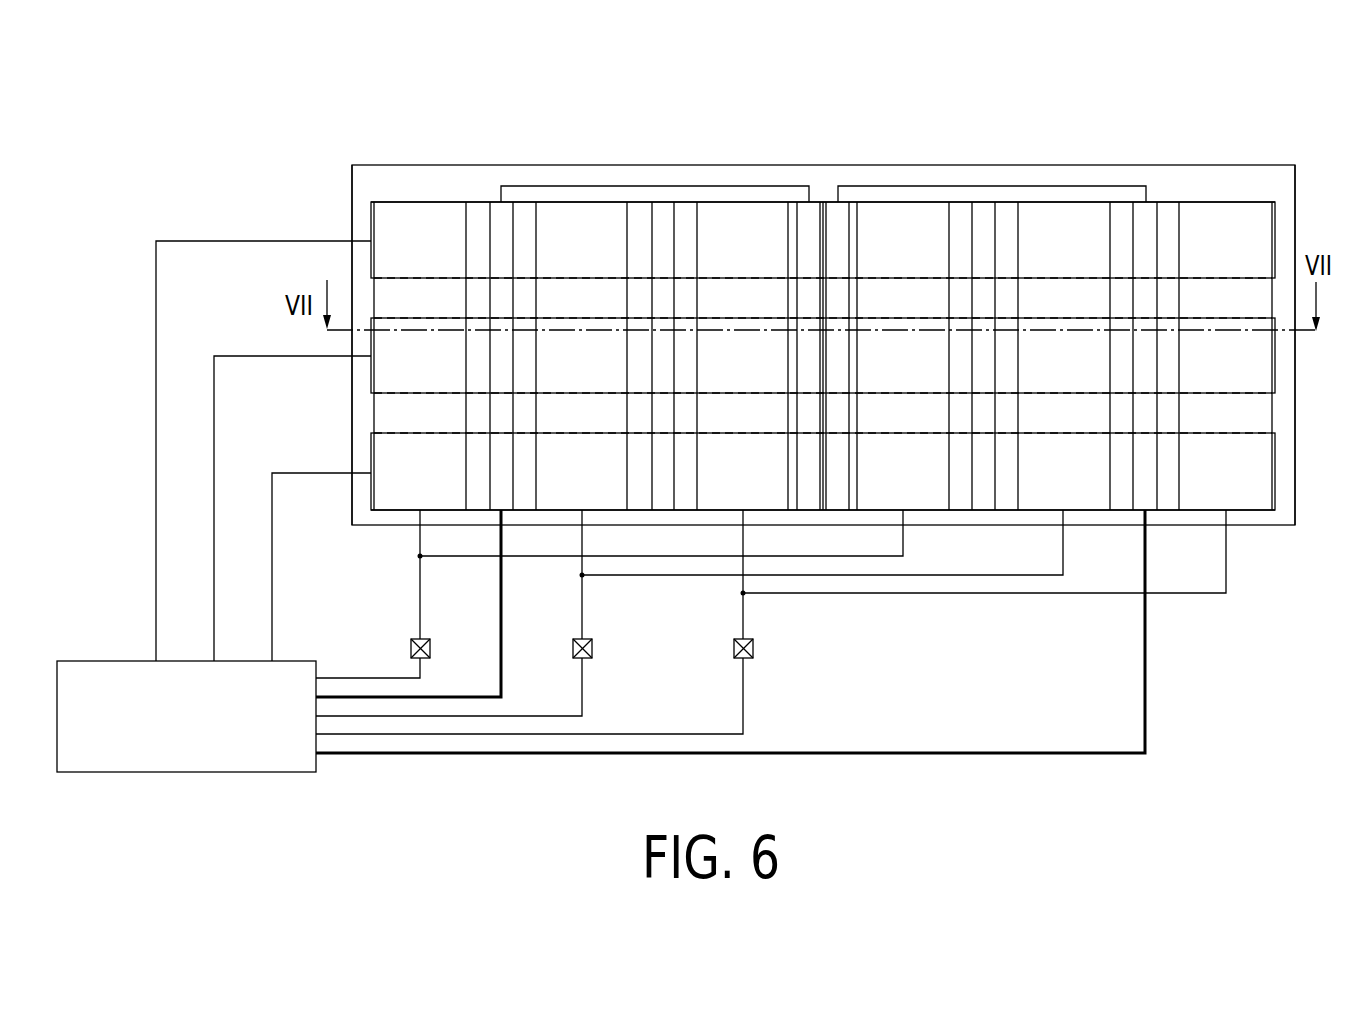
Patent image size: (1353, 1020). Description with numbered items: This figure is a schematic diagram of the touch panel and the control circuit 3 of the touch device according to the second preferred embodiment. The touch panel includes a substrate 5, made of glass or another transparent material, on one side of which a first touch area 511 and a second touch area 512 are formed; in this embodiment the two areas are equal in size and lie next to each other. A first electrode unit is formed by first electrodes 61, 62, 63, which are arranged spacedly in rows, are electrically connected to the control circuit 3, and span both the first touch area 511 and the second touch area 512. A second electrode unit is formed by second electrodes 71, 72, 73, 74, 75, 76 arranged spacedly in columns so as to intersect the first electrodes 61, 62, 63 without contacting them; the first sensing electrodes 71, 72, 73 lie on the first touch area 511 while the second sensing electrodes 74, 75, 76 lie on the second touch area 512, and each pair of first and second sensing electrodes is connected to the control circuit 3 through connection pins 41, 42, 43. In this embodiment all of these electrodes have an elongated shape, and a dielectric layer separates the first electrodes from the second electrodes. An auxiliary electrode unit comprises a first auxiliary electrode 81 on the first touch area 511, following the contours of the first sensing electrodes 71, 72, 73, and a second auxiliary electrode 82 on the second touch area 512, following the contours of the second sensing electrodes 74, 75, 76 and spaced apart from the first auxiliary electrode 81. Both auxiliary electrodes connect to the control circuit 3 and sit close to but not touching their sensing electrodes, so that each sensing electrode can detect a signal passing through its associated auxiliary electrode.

The control circuit 3 is at (213, 780).
The substrate 5 is at (430, 150).
The first touch area 511 is at (366, 180).
The second touch area 512 is at (1256, 180).
The first electrode 61 is at (371, 210).
The first electrode 62 is at (371, 375).
The first electrode 63 is at (371, 447).
The first sensing electrode 71 is at (450, 500).
The first sensing electrode 72 is at (610, 500).
The first sensing electrode 73 is at (771, 500).
The second sensing electrode 74 is at (931, 500).
The second sensing electrode 75 is at (1093, 500).
The second sensing electrode 76 is at (1253, 500).
The first auxiliary electrode 81 is at (668, 225).
The second auxiliary electrode 82 is at (990, 225).
The connection pin 41 is at (411, 649).
The connection pin 42 is at (573, 649).
The connection pin 43 is at (734, 649).